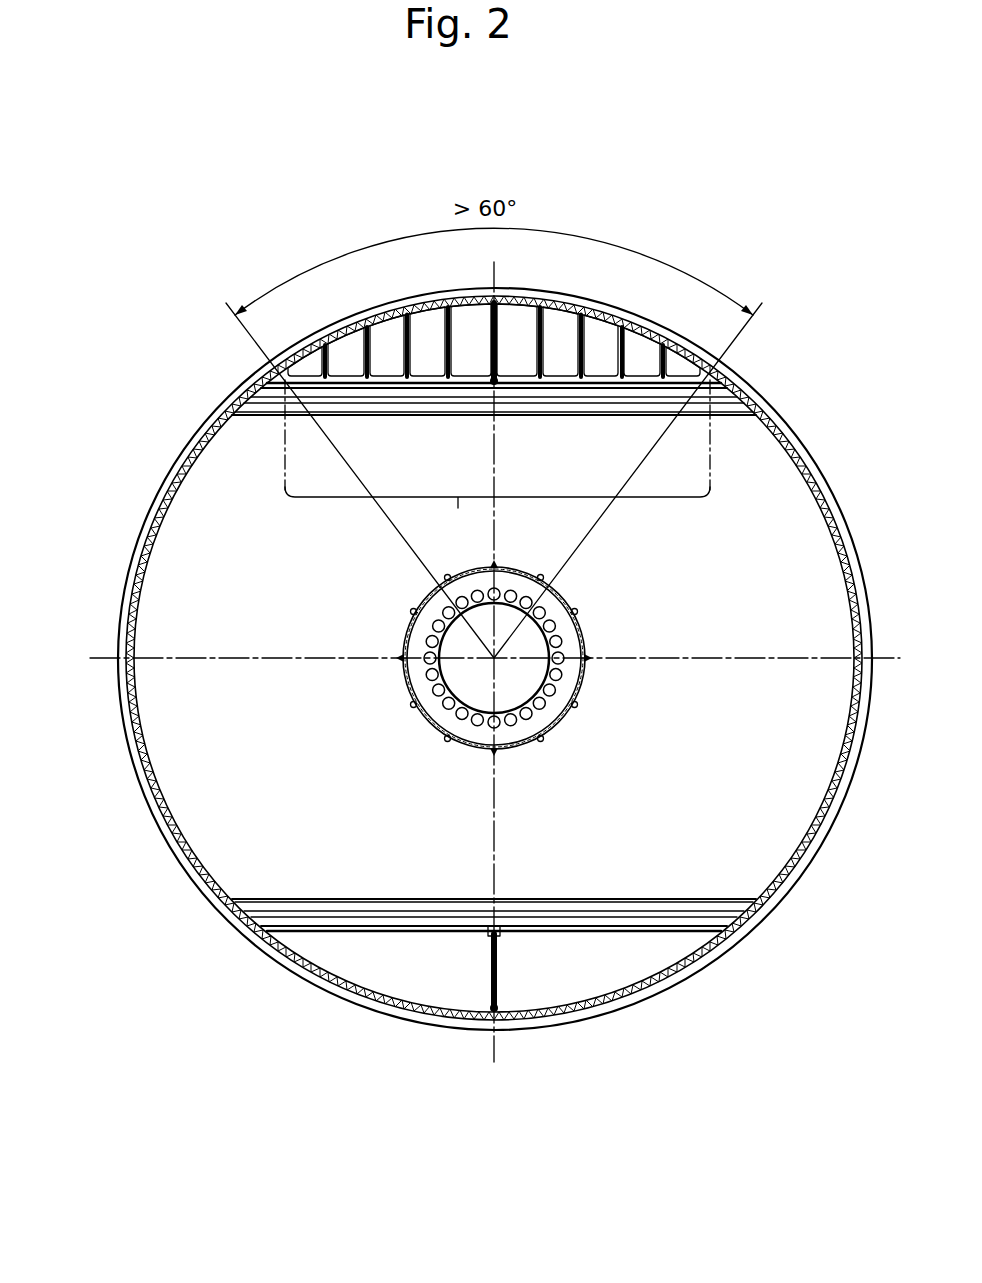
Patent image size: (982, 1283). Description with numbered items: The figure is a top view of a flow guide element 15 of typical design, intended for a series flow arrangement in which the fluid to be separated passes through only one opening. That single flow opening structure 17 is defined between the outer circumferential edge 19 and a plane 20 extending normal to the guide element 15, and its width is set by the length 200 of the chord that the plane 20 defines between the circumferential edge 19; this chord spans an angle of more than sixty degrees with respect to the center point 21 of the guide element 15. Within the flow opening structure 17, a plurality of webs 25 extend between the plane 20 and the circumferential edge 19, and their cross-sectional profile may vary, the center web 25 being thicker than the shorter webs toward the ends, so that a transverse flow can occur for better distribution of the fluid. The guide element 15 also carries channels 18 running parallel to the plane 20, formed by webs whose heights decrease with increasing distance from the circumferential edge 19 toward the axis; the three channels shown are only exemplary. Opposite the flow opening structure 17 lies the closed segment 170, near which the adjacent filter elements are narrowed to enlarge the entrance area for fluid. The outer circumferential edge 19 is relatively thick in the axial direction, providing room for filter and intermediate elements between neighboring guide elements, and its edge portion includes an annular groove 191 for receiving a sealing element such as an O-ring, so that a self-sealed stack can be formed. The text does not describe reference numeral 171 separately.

The flow guide element 15 is at (748, 472).
The flow opening structure 17 is at (558, 360).
The closed segment 170 is at (458, 985).
The rib cell 171 is at (643, 376).
The channels 18 is at (228, 417).
The outer circumferential edge 19 is at (862, 592).
The annular groove 191 is at (157, 808).
The plane 20 is at (593, 332).
The length of the chord 200 is at (497, 459).
The center point 21 is at (410, 700).
The webs 25 is at (360, 352).